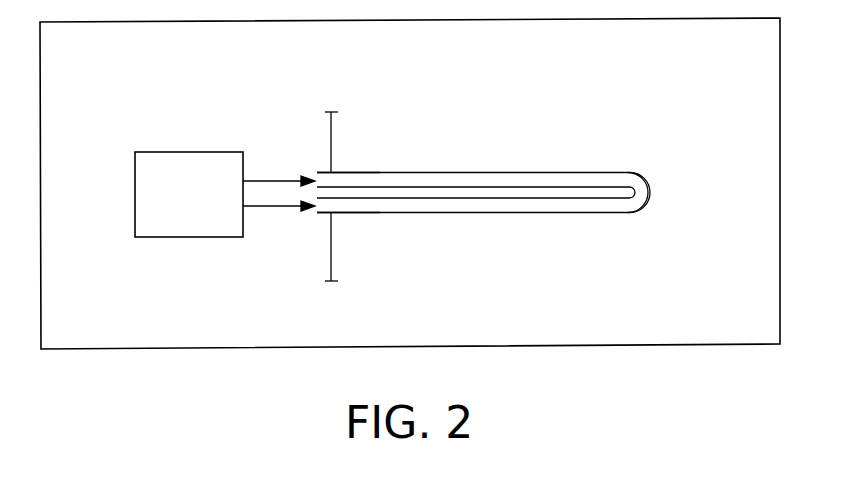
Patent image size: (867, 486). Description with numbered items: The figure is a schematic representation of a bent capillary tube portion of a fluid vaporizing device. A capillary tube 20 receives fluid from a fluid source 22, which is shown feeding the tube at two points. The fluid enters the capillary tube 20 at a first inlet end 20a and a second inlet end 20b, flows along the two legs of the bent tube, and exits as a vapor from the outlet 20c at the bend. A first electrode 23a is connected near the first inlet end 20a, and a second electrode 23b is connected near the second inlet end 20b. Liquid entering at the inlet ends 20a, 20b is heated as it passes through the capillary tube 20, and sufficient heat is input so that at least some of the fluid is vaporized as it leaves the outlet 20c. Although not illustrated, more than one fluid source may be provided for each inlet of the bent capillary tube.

The capillary tube 20 is at (532, 213).
The first inlet end 20a is at (322, 214).
The second inlet end 20b is at (322, 172).
The outlet 20c is at (651, 190).
The fluid source 22 is at (135, 176).
The first electrode 23a is at (332, 258).
The second electrode 23b is at (332, 130).